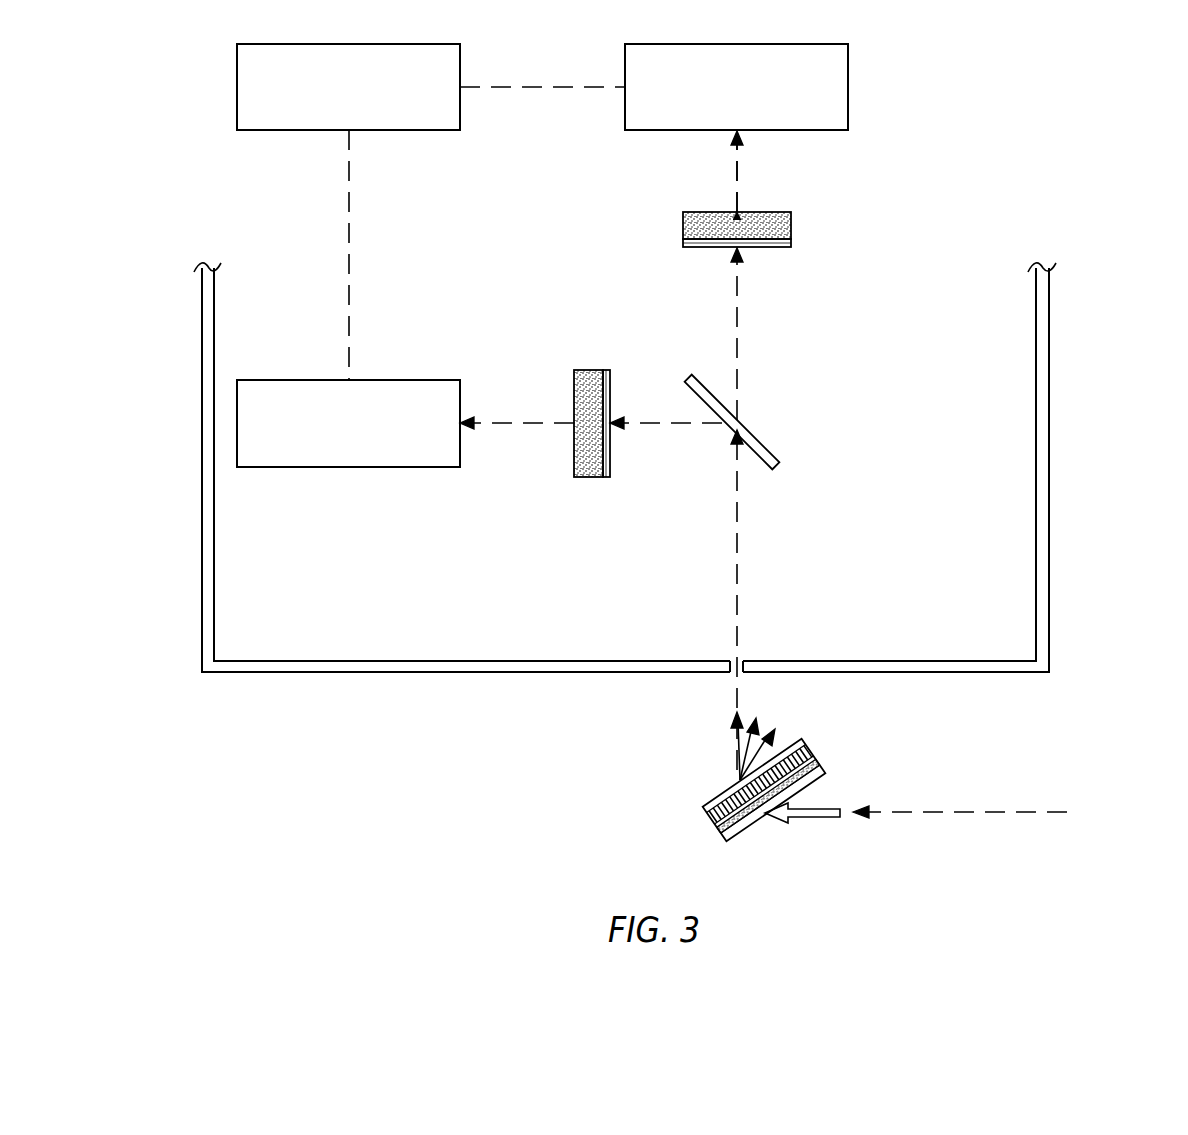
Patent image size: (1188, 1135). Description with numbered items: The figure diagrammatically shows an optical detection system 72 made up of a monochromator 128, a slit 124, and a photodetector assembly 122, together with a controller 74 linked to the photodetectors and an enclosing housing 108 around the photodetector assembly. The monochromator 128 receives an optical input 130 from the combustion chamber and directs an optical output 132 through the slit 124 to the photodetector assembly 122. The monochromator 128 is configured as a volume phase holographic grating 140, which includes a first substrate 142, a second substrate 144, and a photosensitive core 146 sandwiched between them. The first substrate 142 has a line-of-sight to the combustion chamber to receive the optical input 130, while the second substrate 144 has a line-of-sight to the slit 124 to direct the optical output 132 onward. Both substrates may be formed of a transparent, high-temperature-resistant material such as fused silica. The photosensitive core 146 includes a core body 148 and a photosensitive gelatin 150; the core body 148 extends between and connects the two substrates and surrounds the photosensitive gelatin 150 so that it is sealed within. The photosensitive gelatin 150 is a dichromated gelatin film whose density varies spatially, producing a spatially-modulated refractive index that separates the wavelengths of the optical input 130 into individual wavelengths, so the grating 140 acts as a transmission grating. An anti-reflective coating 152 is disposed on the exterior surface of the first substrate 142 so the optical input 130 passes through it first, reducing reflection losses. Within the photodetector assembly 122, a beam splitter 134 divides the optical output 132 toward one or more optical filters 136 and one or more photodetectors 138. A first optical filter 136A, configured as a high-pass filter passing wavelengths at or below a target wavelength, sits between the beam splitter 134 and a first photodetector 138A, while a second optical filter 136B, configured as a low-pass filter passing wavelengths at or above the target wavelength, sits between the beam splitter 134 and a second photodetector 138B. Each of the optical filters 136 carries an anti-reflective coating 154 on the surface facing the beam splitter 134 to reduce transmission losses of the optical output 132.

The optical detection system 72 is at (1072, 108).
The controller 74 is at (363, 118).
The housing 108 is at (1040, 326).
The photodetector assembly 122 is at (873, 210).
The slit 124 is at (731, 677).
The monochromator 128 is at (821, 787).
The optical input 130 is at (1036, 812).
The optical output 132 is at (738, 700).
The beam splitter 134 is at (755, 437).
The optical filters 136 is at (725, 385).
The first optical filter 136A is at (791, 225).
The second optical filter 136B is at (590, 478).
The photodetectors 138 is at (542, 255).
The first photodetector 138A is at (789, 119).
The second photodetector 138B is at (404, 454).
The volume phase holographic grating 140 is at (764, 790).
The first substrate 142 is at (760, 784).
The second substrate 144 is at (756, 778).
The photosensitive core 146 is at (815, 748).
The core body 148 is at (770, 799).
The photosensitive gelatin 150 is at (768, 796).
The anti-reflective coating 152 is at (765, 820).
The anti-reflective coating 154 is at (700, 243).